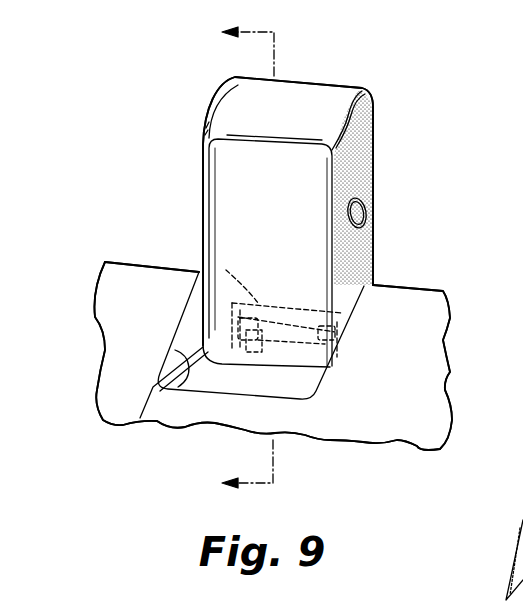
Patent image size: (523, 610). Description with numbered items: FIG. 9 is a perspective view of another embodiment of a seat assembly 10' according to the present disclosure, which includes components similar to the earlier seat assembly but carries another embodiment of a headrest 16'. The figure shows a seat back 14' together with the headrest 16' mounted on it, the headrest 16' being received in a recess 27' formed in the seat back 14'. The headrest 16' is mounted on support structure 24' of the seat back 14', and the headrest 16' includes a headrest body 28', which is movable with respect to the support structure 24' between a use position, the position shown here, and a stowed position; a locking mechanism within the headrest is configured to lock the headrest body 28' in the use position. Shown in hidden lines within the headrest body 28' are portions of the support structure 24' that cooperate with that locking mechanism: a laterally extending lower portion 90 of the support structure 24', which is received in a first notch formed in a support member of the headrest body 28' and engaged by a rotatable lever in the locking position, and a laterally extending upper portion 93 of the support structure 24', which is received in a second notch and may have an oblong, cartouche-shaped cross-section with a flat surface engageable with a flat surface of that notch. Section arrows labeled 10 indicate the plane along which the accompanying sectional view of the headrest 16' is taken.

The seat assembly 10' is at (245, 241).
The section line 10- 10 is at (270, 260).
The seat back 14' is at (262, 317).
The headrest 16' is at (250, 191).
The headrest body 28' is at (228, 216).
The support structure 24' is at (317, 245).
The laterally extending upper portion 93 is at (230, 305).
The recess 27' is at (163, 409).
The laterally extending lower portion 90 is at (250, 340).